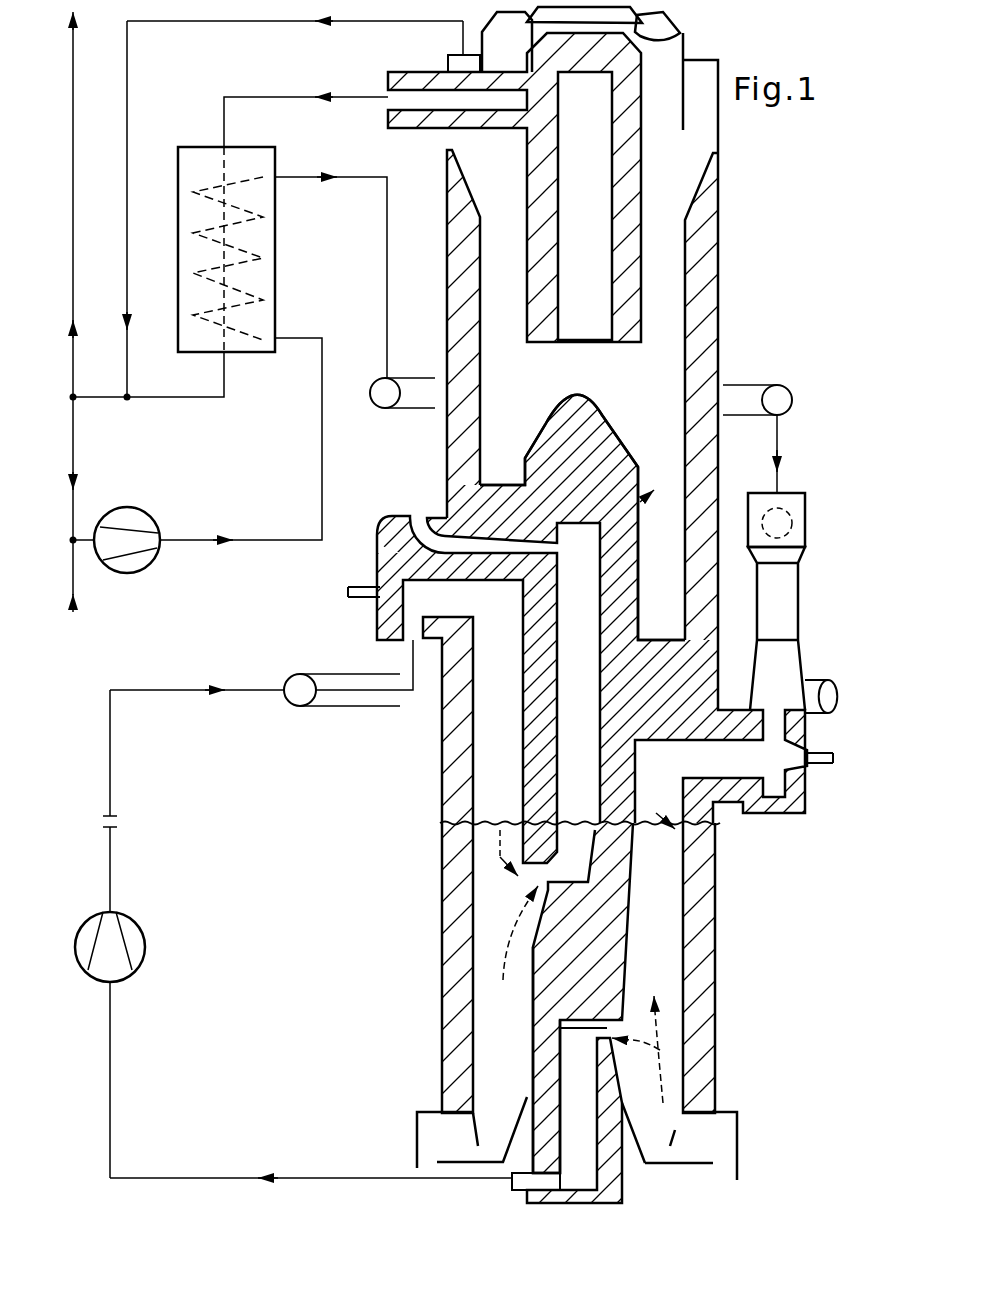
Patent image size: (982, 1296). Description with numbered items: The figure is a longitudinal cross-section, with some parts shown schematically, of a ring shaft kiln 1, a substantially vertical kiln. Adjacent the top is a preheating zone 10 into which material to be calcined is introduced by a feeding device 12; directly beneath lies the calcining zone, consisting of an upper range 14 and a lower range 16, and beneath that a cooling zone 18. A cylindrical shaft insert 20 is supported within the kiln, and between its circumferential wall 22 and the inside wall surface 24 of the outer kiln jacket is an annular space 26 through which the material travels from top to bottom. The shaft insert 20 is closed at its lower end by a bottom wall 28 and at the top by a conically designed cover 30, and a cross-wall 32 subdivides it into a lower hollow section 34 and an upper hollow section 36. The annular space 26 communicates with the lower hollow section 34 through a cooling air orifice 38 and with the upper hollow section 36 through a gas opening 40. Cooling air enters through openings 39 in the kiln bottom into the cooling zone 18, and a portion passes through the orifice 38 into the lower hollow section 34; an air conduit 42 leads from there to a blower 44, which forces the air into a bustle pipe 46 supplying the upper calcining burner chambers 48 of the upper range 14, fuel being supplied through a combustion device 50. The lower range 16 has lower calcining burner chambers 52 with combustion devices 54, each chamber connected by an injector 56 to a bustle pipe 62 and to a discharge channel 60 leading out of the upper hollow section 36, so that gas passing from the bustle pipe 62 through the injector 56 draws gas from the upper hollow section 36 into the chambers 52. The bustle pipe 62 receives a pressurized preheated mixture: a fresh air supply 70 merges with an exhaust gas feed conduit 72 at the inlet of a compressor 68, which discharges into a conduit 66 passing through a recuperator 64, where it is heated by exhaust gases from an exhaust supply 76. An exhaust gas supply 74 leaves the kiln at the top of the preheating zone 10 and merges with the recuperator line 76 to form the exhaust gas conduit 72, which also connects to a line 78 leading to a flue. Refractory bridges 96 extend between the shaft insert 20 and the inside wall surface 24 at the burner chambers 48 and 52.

The ring shaft kiln 1 is at (738, 190).
The preheating zone 10 is at (664, 281).
The feeding device 12 is at (683, 38).
The upper range calcining zone 14 is at (428, 725).
The lower range calcining zone 16 is at (680, 837).
The cooling zone 18 is at (676, 950).
The cylindrical shaft insert 20 is at (620, 559).
The circumferential wall 22 is at (630, 845).
The inside wall surface 24 is at (680, 880).
The annular space 26 is at (667, 1040).
The bottom wall 28 is at (615, 1183).
The conically designed cover 30 is at (618, 436).
The cross-wall 32 is at (590, 965).
The lower hollow section 34 is at (573, 1083).
The upper hollow section 36 is at (575, 757).
The cooling air orifice 38 is at (607, 1028).
The openings 39 is at (693, 1140).
The gas opening 40 is at (540, 878).
The air conduit 42 is at (183, 1176).
The blower 44 is at (120, 938).
The bustle pipe 46 is at (300, 708).
The upper calcining burner chambers 48 is at (400, 597).
The combustion device 50 is at (348, 593).
The lower calcining burner chambers 52 is at (747, 763).
The combustion devices 54 is at (822, 765).
The injector 56 is at (788, 600).
The discharge channel 60 is at (405, 520).
The bustle pipe 62 is at (413, 402).
The recuperator 64 is at (276, 277).
The conduit 66 is at (322, 447).
The compressor 68 is at (128, 530).
The fresh air supply 70 is at (73, 580).
The exhaust gas feed conduit 72 is at (73, 440).
The exhaust gas supply 74 is at (458, 53).
The exhaust supply 76 is at (281, 95).
The line to flue 78 is at (73, 108).
The refractory bridges 96 is at (498, 510).